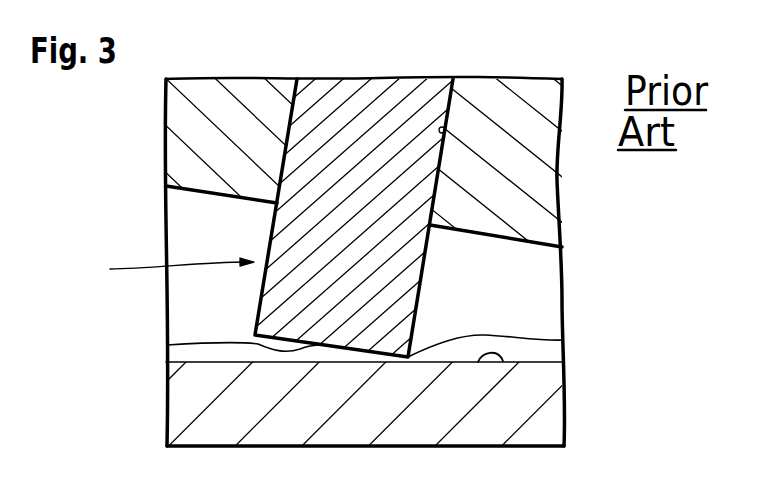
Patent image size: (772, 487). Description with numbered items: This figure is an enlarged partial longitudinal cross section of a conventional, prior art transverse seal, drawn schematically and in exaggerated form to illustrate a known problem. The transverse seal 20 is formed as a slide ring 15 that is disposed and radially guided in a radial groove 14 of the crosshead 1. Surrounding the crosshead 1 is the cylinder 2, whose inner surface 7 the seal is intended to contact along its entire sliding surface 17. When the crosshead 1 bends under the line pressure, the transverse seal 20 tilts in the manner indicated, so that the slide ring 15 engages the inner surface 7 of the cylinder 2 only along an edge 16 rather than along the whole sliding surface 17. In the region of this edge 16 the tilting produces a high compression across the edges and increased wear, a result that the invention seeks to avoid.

The crosshead 1 is at (177, 150).
The cylinder 2 is at (185, 407).
The inner surface 7 is at (493, 360).
The radial groove 14 is at (446, 128).
The slide ring 15 is at (375, 117).
The edge 16 is at (563, 341).
The sliding surface 17 is at (167, 345).
The transverse seal 20 is at (171, 270).